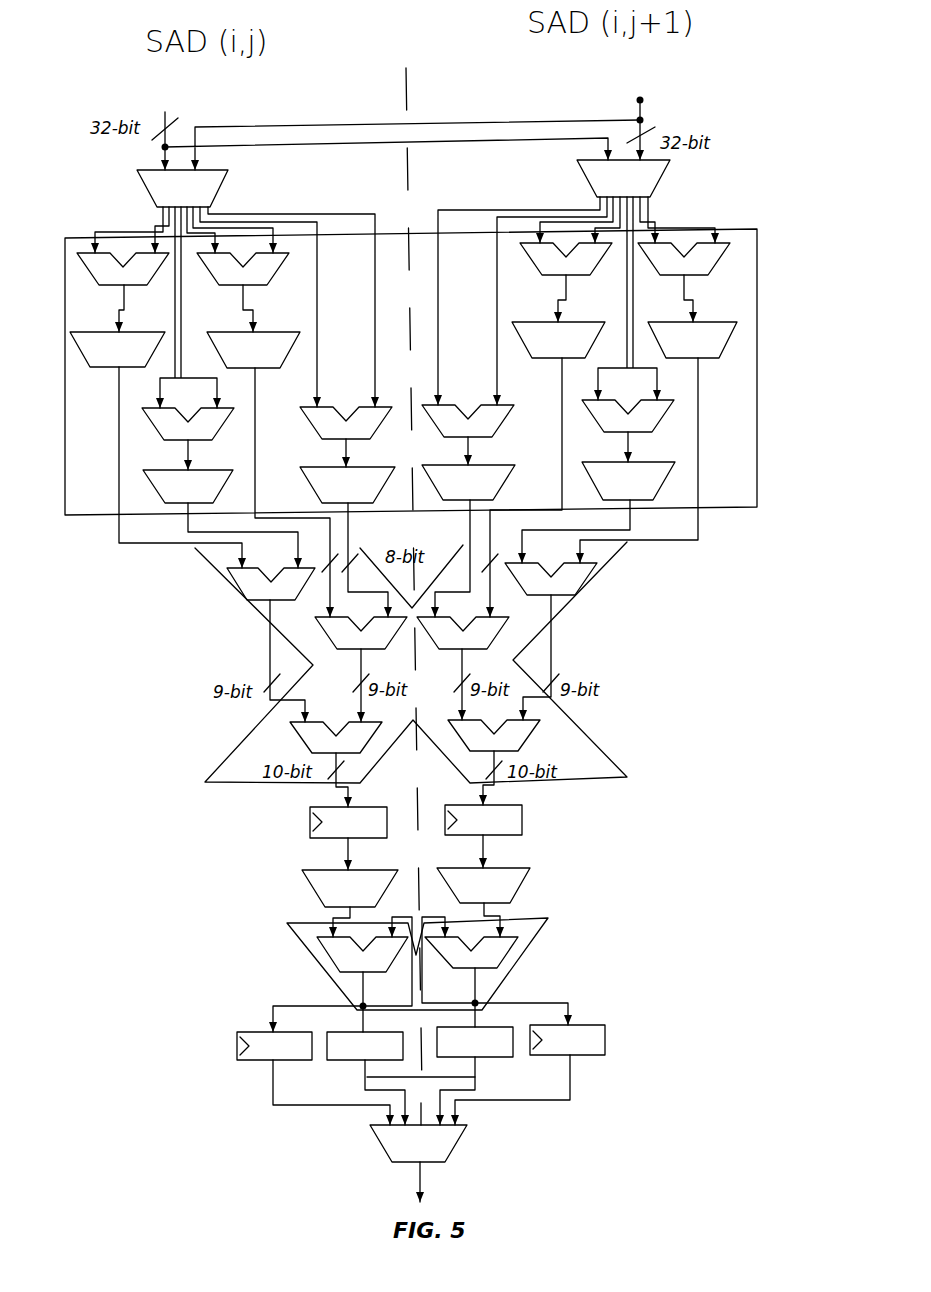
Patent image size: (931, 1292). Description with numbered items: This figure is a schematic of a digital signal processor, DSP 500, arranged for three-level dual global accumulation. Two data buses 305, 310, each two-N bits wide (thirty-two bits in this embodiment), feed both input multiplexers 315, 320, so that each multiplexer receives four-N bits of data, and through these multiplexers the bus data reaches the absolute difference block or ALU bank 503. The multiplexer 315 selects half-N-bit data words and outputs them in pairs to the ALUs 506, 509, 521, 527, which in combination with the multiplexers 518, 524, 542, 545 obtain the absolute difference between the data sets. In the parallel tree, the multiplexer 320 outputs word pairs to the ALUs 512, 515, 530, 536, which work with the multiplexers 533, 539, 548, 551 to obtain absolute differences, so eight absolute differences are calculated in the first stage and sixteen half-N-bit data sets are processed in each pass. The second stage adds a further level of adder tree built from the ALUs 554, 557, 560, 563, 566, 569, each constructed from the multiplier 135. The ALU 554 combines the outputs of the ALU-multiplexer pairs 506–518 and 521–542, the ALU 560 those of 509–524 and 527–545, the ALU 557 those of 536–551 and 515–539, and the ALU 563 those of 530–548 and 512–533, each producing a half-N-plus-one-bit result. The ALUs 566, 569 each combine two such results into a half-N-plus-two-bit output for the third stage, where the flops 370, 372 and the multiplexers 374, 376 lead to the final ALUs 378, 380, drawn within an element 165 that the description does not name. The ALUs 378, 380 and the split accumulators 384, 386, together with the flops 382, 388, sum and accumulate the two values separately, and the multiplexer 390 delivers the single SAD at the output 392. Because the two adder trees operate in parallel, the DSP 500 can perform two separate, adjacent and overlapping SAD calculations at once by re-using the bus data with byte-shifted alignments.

The DSP 500 is at (402, 118).
The data bus 305 is at (122, 119).
The data bus 310 is at (679, 111).
The multiplexer 315 is at (140, 186).
The multiplexer 320 is at (668, 182).
The Absolute Difference block (ALU bank) 503 is at (95, 518).
The ALU 506 is at (122, 296).
The ALU 509 is at (248, 290).
The ALU 512 is at (562, 287).
The ALU 515 is at (728, 265).
The multiplexer 518 is at (108, 370).
The multiplexer 524 is at (252, 330).
The multiplexer 533 is at (566, 322).
The multiplexer 539 is at (736, 347).
The ALU 521 is at (152, 434).
The ALU 527 is at (322, 405).
The ALU 530 is at (555, 392).
The ALU 536 is at (680, 430).
The multiplexer 542 is at (145, 490).
The multiplexer 545 is at (318, 467).
The multiplexer 548 is at (556, 455).
The multiplexer 551 is at (682, 480).
The multiplier 135 is at (625, 550).
The ALU 554 is at (235, 590).
The ALU 557 is at (582, 588).
The ALU 560 is at (295, 640).
The ALU 563 is at (525, 628).
The ALU 566 is at (300, 745).
The ALU 569 is at (530, 740).
The flop 370 is at (310, 822).
The flop 372 is at (523, 825).
The multiplexer 374 is at (306, 886).
The multiplexer 376 is at (527, 888).
The accumulator adder stage 165 is at (548, 930).
The ALU 378 is at (330, 960).
The ALU 380 is at (510, 955).
The flop 382 is at (237, 1052).
The accumulator 384 is at (342, 1062).
The accumulator 386 is at (495, 1060).
The flop 388 is at (606, 1042).
The multiplexer 390 is at (458, 1148).
The output 392 is at (425, 1182).